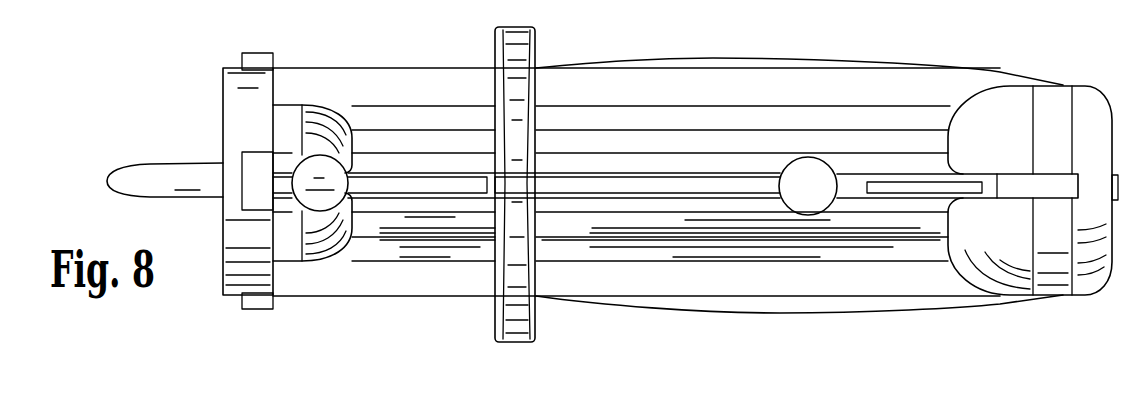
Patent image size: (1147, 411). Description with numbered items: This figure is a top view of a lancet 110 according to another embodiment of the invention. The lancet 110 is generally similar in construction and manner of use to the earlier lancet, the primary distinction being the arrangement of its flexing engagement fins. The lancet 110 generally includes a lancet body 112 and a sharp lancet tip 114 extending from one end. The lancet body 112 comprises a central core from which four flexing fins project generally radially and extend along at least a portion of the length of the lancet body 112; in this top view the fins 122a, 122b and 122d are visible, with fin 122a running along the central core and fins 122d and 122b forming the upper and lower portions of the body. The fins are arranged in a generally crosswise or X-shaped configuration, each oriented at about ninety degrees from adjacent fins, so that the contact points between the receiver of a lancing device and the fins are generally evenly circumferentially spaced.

The lancet 110 is at (325, 330).
The lancet body 112 is at (834, 156).
The sharp lancet tip 114 is at (150, 182).
The flexing fin 122a is at (625, 187).
The flexing fin 122b is at (762, 292).
The flexing fin 122d is at (777, 68).